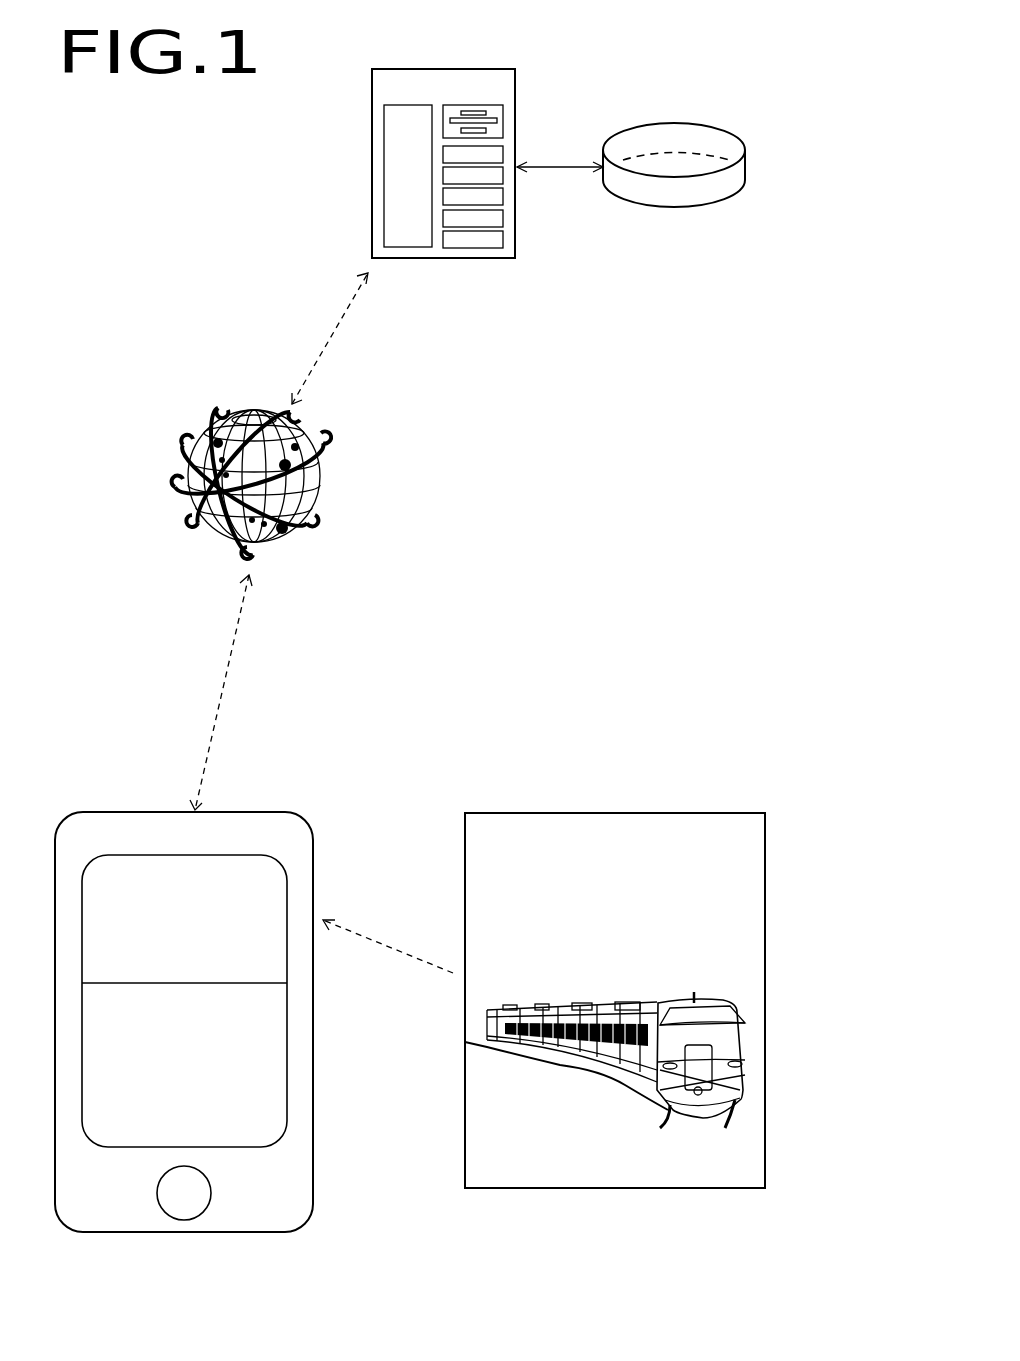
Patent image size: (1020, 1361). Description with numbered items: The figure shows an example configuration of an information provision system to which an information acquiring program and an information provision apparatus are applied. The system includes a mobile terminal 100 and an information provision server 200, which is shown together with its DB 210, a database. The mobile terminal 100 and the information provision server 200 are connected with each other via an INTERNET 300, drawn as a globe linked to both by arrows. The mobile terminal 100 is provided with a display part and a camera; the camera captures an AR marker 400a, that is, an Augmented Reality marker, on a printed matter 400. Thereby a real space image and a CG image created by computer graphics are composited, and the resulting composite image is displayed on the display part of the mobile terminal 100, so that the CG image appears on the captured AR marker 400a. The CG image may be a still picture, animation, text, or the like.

The mobile terminal 100 is at (290, 812).
The information provision server 200 is at (517, 96).
The database 210 is at (737, 134).
The INTERNET 300 is at (320, 446).
The printed matter 400 is at (735, 812).
The AR marker 400a is at (745, 1050).